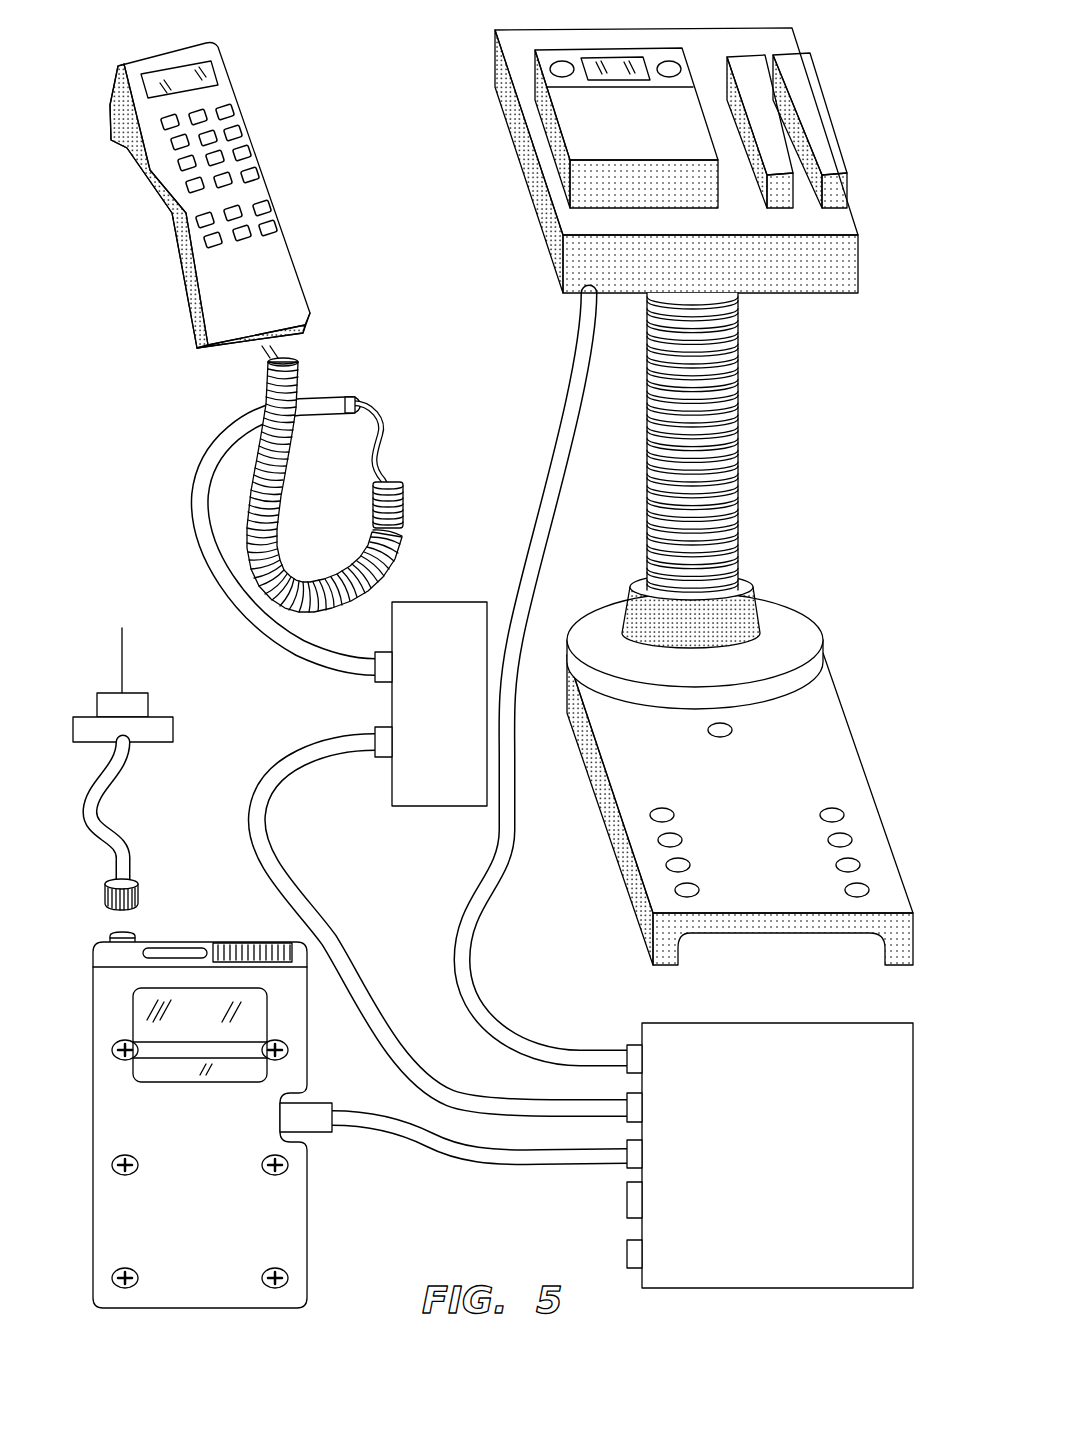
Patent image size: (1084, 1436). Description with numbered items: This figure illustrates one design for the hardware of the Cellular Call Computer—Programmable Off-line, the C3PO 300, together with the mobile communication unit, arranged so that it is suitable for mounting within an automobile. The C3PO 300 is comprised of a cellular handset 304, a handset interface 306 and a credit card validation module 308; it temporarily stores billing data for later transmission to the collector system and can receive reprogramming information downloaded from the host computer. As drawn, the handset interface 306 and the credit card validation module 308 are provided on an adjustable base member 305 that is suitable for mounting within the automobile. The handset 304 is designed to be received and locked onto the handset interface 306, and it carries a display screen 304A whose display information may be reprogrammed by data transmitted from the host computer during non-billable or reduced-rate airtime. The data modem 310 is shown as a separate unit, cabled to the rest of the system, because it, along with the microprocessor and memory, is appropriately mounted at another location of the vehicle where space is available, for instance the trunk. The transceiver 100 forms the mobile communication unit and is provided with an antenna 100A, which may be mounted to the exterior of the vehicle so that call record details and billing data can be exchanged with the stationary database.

The transceiver 100 is at (227, 1145).
The antenna 100A is at (149, 702).
The Cellular Call Computer—Programmable Off-line (C3PO) 300 is at (797, 1157).
The cellular handset 304 is at (252, 103).
The display screen 304A is at (211, 69).
The adjustable base member 305 is at (806, 558).
The handset interface 306 is at (592, 31).
The credit card validation module (CRVM) 308 is at (795, 96).
The data modem 310 is at (463, 708).